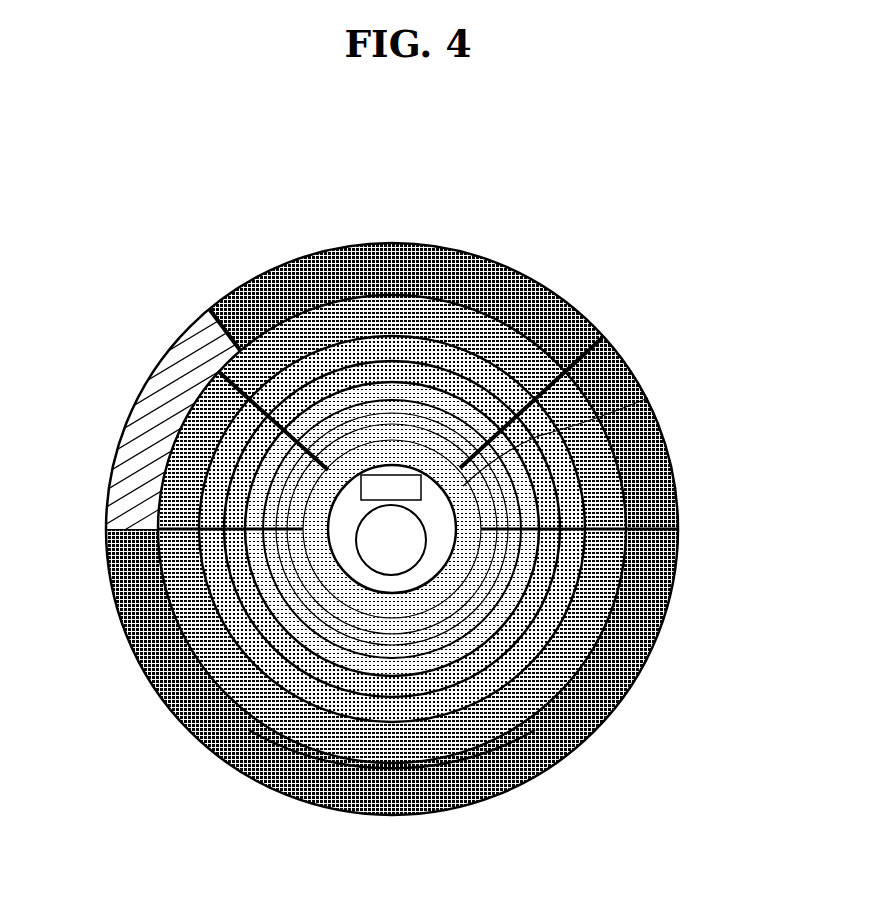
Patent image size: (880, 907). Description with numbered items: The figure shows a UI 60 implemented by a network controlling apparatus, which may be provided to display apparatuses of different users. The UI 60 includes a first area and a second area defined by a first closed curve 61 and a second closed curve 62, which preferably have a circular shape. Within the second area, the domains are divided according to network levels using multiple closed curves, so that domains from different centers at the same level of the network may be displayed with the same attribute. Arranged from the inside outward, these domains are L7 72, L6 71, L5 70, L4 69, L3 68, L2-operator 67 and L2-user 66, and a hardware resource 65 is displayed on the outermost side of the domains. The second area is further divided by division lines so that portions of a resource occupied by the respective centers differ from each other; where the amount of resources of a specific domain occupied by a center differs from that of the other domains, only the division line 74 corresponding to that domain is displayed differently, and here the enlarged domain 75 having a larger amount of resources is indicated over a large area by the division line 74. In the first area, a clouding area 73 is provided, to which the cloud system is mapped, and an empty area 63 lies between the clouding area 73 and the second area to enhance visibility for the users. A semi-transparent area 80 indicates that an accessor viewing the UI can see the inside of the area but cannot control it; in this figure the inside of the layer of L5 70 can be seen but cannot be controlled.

The UI 60 is at (676, 434).
The first closed curve 61 is at (433, 238).
The second closed curve 62 is at (382, 610).
The empty area 63 is at (355, 593).
The hardware resource 65 is at (283, 791).
The L2-user domain 66 is at (258, 768).
The L2-operator domain 67 is at (260, 697).
The L3 domain 68 is at (267, 665).
The L4 domain 69 is at (268, 628).
The L5 domain 70 is at (265, 598).
The L6 domain 71 is at (267, 580).
The L7 domain 72 is at (280, 560).
The clouding area 73 is at (402, 568).
The division line 74 is at (248, 347).
The enlarged domain 75 is at (145, 383).
The semi-transparent area 80 is at (640, 390).